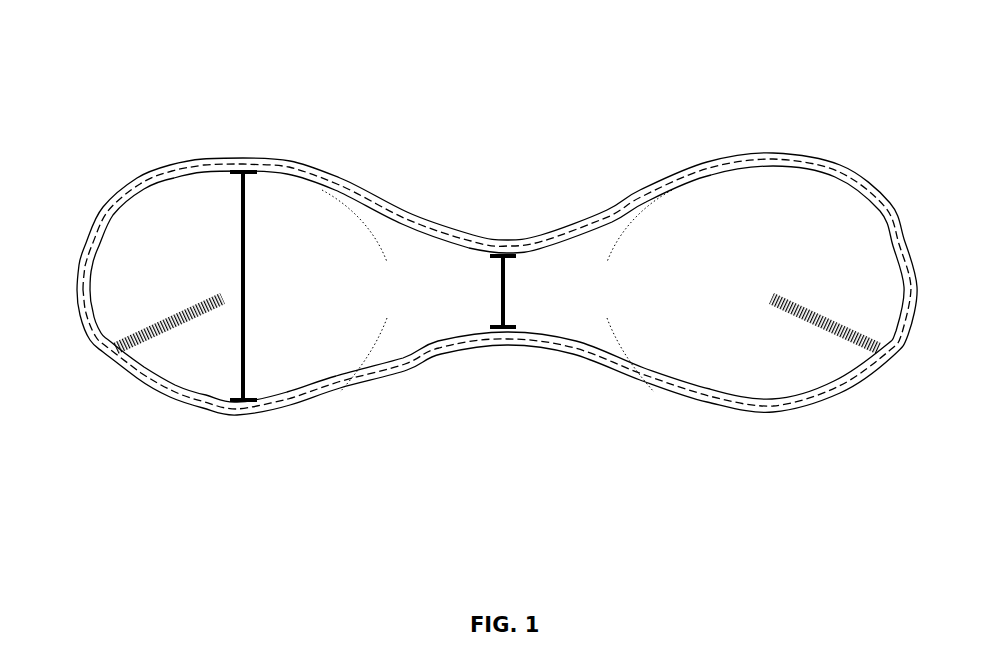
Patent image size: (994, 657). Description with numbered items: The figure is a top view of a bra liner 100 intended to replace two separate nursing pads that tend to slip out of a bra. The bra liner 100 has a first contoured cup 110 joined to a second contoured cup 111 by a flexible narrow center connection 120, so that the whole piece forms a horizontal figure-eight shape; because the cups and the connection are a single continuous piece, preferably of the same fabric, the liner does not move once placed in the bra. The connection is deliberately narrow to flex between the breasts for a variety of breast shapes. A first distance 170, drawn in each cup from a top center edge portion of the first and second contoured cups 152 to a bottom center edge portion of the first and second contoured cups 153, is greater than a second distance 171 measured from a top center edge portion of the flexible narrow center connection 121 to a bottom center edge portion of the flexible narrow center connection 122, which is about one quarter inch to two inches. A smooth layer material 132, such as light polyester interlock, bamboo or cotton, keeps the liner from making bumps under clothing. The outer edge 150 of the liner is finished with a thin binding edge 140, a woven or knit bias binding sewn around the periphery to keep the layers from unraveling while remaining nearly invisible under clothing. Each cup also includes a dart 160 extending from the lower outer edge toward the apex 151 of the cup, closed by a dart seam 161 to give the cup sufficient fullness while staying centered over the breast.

The bra liner 100 is at (488, 298).
The first contoured cup 110 is at (420, 274).
The second contoured cup 111 is at (762, 222).
The flexible narrow center connection 120 is at (525, 291).
The top center edge portion of the flexible narrow center connection 121 is at (510, 250).
The bottom center edge portion of the flexible narrow center connection 122 is at (502, 332).
The smooth layer material 132 is at (283, 330).
The binding edge 140 is at (917, 270).
The outer edge 150 is at (99, 227).
The apex 151 is at (217, 293).
The top center edge portion of the first and second contoured cups 152 is at (240, 170).
The bottom center edge portion of the first and second contoured cups 153 is at (240, 402).
The dart 160 is at (166, 334).
The dart seam 161 is at (145, 326).
The first distance 170 is at (245, 270).
The second distance 171 is at (505, 302).